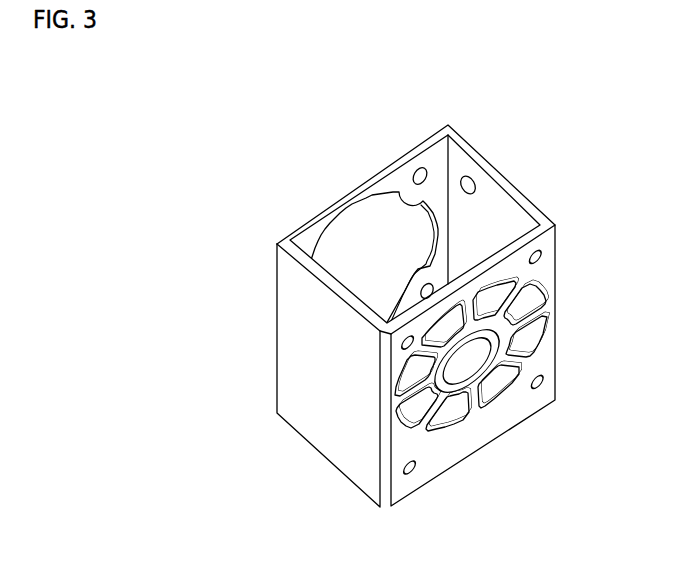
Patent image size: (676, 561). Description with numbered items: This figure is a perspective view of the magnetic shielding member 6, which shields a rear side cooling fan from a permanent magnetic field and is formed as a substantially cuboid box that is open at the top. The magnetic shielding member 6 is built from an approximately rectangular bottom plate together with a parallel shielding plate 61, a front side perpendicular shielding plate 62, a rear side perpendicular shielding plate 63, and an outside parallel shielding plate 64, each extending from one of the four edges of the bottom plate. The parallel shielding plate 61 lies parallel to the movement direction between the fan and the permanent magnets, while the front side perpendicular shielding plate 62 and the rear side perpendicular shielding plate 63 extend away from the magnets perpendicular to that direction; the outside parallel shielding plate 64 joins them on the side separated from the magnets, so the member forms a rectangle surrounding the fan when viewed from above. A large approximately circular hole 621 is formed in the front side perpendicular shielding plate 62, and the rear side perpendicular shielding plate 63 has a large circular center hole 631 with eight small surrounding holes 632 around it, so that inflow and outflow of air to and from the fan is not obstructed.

The magnetic shielding member 6 is at (277, 122).
The parallel shielding plate 61 is at (330, 413).
The front side perpendicular shielding plate 62 is at (362, 197).
The hole 621 is at (370, 252).
The rear side perpendicular shielding plate 63 is at (515, 386).
The center hole 631 is at (462, 360).
The surrounding holes 632 is at (445, 420).
The outside parallel shielding plate 64 is at (495, 213).